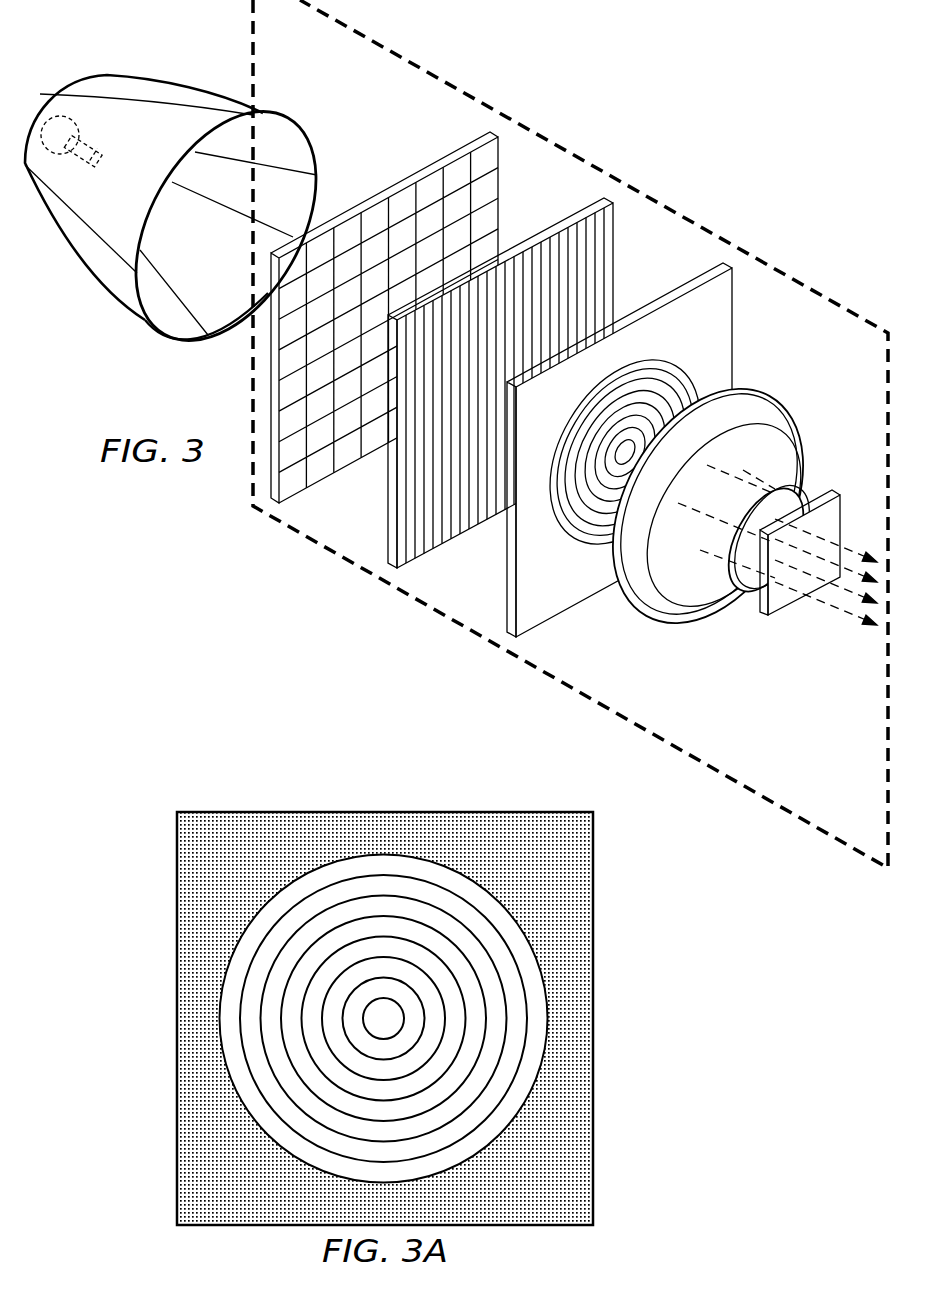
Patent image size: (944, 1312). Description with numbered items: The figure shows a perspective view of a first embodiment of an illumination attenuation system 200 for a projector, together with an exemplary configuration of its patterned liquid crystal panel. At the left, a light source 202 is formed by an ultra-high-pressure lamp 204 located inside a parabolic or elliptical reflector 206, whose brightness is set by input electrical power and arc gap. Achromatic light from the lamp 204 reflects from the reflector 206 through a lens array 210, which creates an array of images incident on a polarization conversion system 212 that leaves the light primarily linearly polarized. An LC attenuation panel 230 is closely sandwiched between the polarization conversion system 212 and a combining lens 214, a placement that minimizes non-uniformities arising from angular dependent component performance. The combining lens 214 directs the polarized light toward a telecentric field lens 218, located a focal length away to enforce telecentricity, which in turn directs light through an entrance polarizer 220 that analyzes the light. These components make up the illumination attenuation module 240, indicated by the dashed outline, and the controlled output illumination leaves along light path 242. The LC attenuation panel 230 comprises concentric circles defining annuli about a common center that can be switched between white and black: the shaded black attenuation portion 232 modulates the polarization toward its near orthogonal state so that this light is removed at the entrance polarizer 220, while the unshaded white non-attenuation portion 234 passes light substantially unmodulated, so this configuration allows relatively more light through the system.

In FIG. 3, the illumination attenuation system 200 is at (456, 434).
In FIG. 3, the light source 202 is at (103, 276).
In FIG. 3, the ultra-high-pressure lamp 204 is at (113, 119).
In FIG. 3, the parabolic or elliptical reflector 206 is at (283, 128).
In FIG. 3, the lens array 210 is at (455, 155).
In FIG. 3, the polarization conversion system 212 is at (570, 222).
In FIG. 3, the combining lens 214 is at (745, 387).
In FIG. 3, the telecentric field lens 218 is at (787, 480).
In FIG. 3, the entrance polarizer 220 is at (766, 611).
In FIG. 3, the LC attenuation panel 230 is at (689, 291).
In FIG. 3A, the LC attenuation panel 230 is at (346, 1018).
In FIG. 3A, the black attenuation portion 232 is at (186, 856).
In FIG. 3A, the white non-attenuation portion 234 is at (228, 1004).
In FIG. 3, the illumination attenuation module 240 is at (712, 237).
In FIG. 3, the light path 242 is at (824, 604).